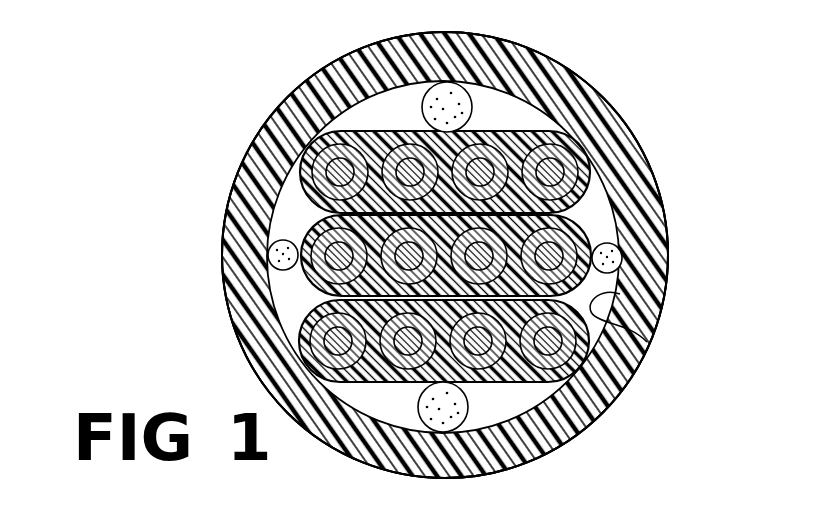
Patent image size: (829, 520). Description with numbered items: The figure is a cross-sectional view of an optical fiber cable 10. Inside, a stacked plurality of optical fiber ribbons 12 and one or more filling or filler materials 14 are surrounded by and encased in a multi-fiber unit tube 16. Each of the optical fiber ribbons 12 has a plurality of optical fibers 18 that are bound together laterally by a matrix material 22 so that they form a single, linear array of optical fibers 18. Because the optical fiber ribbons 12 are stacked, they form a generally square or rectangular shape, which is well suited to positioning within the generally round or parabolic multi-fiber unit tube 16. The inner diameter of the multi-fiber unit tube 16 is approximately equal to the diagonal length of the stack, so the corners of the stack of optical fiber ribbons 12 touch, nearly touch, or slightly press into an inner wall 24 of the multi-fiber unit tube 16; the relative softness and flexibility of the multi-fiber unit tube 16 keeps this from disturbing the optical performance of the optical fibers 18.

The optical fiber cable 10 is at (429, 243).
The optical fiber ribbons 12 is at (298, 282).
The filler materials 14 is at (451, 86).
The multi-fiber unit tube 16 is at (260, 156).
The optical fibers 18 is at (493, 137).
The matrix material 22 is at (332, 66).
The inner wall 24 is at (670, 313).